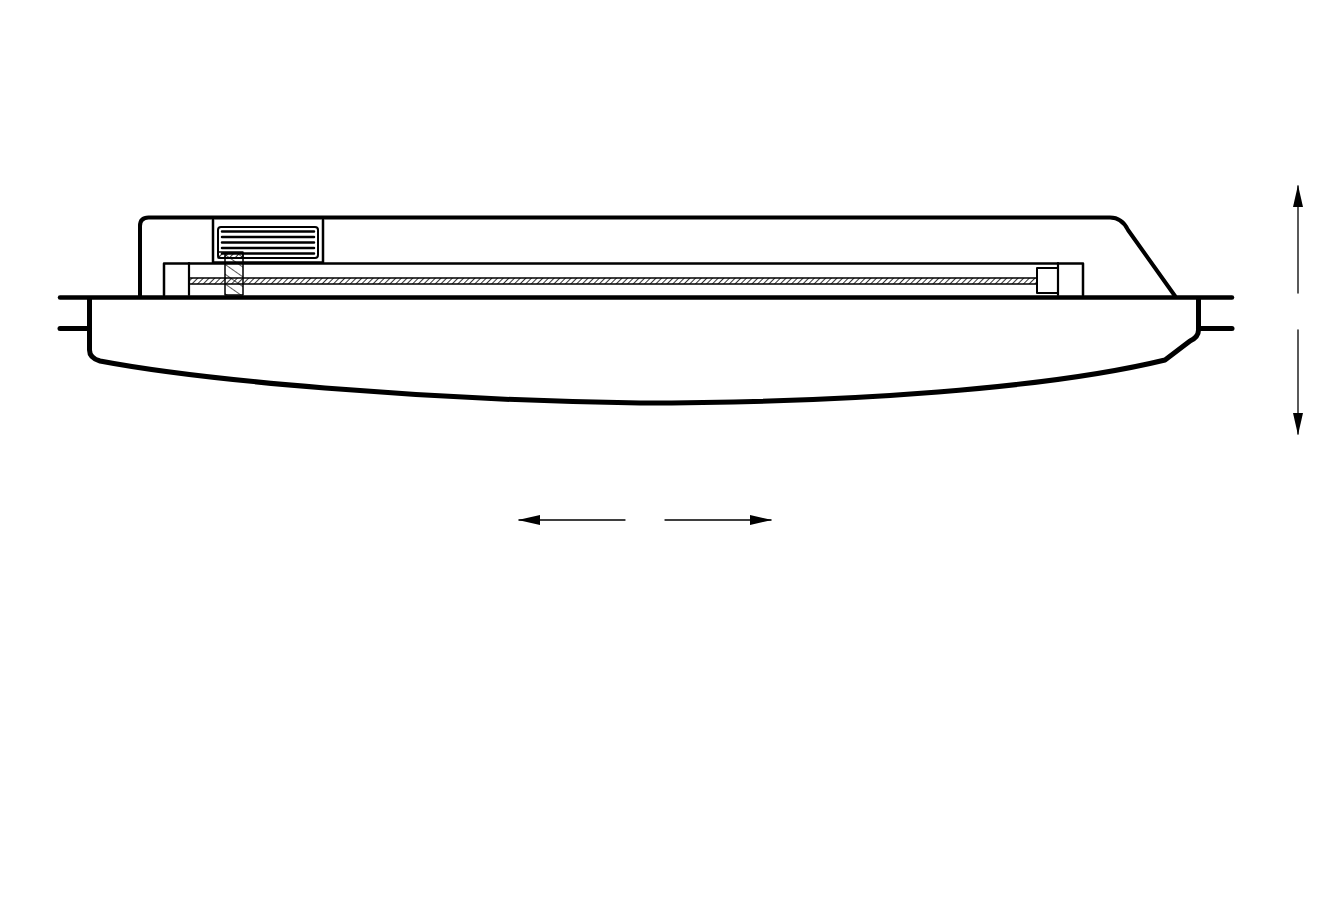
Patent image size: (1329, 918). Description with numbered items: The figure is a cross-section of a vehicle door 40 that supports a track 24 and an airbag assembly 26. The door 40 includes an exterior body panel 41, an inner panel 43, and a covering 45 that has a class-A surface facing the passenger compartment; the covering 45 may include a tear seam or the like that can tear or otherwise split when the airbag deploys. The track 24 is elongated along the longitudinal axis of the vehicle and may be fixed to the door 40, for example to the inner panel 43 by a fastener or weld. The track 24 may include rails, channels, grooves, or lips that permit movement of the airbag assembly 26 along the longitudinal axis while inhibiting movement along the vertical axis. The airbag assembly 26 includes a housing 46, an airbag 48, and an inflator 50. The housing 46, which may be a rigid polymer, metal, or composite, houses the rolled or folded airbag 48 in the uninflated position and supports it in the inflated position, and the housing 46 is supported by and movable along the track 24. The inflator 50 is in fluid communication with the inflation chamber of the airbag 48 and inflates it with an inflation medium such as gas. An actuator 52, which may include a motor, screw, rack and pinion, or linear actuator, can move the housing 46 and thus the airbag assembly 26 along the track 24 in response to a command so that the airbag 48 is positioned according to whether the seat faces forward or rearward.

The door 40 is at (808, 102).
The airbag assembly 26 is at (188, 233).
The covering 45 is at (622, 216).
The track 24 is at (473, 262).
The actuator 52 is at (955, 278).
The inner panel 43 is at (323, 303).
The exterior body panel 41 is at (383, 398).
The inflator 50 is at (213, 257).
The airbag 48 is at (273, 230).
The housing 46 is at (324, 238).